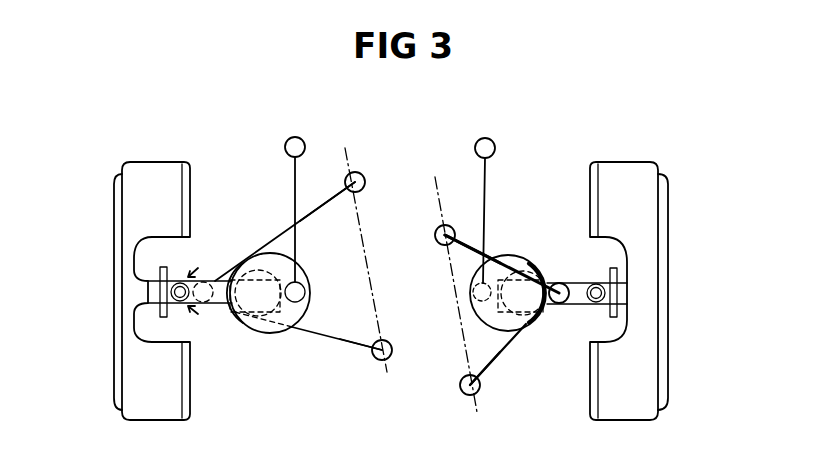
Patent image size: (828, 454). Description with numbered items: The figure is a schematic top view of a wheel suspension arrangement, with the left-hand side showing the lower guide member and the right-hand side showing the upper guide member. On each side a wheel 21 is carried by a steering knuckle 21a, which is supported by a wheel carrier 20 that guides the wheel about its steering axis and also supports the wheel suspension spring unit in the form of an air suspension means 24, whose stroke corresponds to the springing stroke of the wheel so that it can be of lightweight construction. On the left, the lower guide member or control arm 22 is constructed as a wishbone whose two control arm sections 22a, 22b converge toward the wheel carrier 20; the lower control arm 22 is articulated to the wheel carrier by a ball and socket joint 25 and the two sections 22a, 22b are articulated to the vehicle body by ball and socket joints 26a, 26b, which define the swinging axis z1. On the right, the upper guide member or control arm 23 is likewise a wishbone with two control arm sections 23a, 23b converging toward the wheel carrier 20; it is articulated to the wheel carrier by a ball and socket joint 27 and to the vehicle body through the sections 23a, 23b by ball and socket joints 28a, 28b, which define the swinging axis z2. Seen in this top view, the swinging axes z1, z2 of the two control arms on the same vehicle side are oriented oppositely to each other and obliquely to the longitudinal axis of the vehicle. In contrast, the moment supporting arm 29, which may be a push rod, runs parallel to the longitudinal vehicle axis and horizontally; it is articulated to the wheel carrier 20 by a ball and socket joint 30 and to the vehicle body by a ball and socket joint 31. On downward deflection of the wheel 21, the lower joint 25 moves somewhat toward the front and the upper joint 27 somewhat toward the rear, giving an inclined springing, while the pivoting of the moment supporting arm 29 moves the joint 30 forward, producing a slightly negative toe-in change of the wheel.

The wheel carrier 20 is at (218, 306).
The wheel 21 is at (164, 176).
The steering knuckle 21a is at (163, 280).
The lower guide member or control arm 22 is at (257, 241).
The control arm section 22a is at (343, 338).
The control arm section 22b is at (322, 198).
The upper guide member or control arm 23 is at (535, 270).
The control arm section 23a is at (497, 358).
The control arm section 23b is at (508, 270).
The air suspension means 24 is at (284, 325).
The ball and socket joint 25 is at (204, 281).
The ball and socket joint 26a is at (393, 351).
The ball and socket joint 26b is at (377, 166).
The ball and socket joint 27 is at (563, 283).
The ball and socket joint 28a is at (459, 388).
The ball and socket joint 28b is at (437, 233).
The moment supporting arm 29 is at (294, 196).
The ball and socket joint 30 is at (308, 288).
The ball and socket joint 31 is at (299, 137).
The swinging axis z1 is at (366, 255).
The swinging axis z2 is at (454, 288).